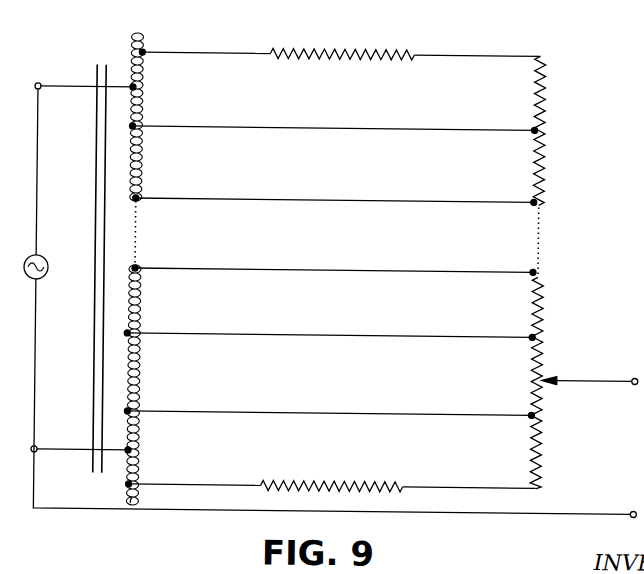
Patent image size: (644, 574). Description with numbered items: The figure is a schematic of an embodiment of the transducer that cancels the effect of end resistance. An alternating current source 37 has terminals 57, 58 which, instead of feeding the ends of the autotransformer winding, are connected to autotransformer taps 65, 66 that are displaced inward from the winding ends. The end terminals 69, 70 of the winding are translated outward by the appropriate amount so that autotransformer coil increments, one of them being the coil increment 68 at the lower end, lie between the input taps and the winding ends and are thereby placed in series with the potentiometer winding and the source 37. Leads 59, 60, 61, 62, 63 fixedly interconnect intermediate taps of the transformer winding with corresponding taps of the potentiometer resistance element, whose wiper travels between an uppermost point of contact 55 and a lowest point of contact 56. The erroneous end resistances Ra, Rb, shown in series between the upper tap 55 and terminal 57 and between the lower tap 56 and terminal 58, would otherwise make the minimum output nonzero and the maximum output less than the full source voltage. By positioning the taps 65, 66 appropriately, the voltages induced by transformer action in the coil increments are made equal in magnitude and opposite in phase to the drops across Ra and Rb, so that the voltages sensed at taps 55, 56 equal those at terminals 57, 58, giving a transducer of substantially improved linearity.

The alternating current source 37 is at (47, 263).
The uppermost point of contact of the wiper 55 is at (540, 50).
The lowest point of contact of the wiper 56 is at (546, 486).
The terminal of the source 57 is at (37, 82).
The terminal of the source 58 is at (40, 446).
The lead 59 is at (307, 126).
The lead 60 is at (307, 199).
The lead 61 is at (305, 268).
The lead 62 is at (302, 334).
The lead 63 is at (303, 411).
The autotransformer tap 65 is at (129, 85).
The autotransformer tap 66 is at (128, 448).
The autotransformer coil increment 68 is at (127, 467).
The end terminal 69 is at (141, 50).
The end terminal 70 is at (140, 496).
The end resistance Ra is at (311, 47).
The end resistance Rb is at (308, 484).